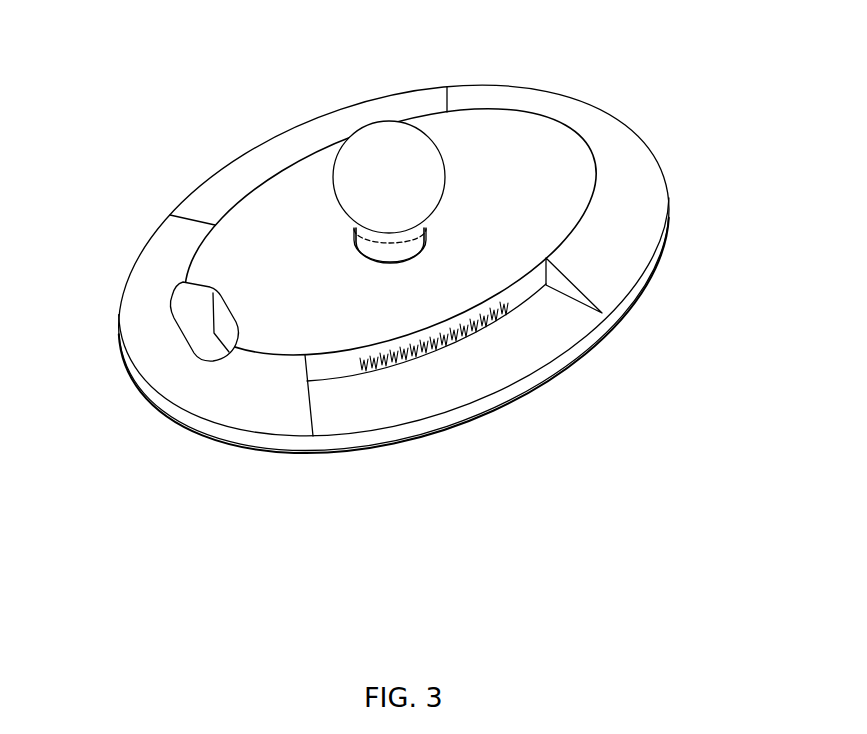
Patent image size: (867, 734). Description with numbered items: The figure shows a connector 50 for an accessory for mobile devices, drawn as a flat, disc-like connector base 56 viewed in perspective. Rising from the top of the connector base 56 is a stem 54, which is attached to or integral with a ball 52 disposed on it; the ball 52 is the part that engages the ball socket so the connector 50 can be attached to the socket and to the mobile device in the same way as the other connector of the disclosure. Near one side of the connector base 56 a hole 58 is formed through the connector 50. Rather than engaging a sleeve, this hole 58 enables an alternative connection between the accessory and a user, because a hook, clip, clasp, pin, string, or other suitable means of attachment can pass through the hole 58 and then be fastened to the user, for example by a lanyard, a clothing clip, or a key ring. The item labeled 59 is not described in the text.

The connector 50 is at (622, 120).
The ball 52 is at (387, 121).
The stem 54 is at (356, 230).
The connector base 56 is at (333, 451).
The hole 58 is at (192, 328).
The label indicia 59 is at (503, 318).